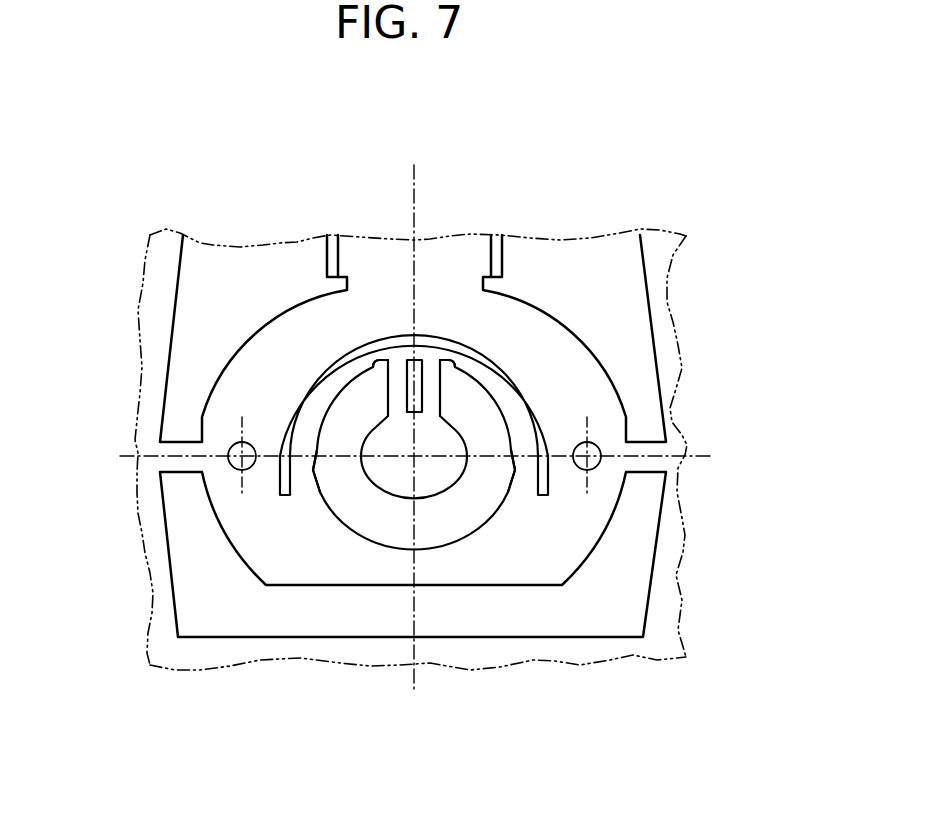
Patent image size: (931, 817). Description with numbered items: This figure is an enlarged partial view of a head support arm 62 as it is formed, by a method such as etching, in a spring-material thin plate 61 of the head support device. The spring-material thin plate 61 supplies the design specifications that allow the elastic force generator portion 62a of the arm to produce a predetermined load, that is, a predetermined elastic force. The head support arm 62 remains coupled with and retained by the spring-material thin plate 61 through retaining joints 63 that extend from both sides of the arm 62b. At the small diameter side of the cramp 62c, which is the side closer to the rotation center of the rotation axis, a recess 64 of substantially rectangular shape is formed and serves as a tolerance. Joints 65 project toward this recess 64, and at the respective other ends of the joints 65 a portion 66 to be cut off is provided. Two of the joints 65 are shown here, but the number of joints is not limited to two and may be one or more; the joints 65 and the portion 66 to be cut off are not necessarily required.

The spring-material thin plate 61 is at (667, 608).
The head support arm 62 is at (457, 262).
The elastic force generator portion 62a is at (303, 475).
The arm 62b is at (527, 335).
The cramp 62c is at (502, 390).
The retaining joints 63 is at (173, 462).
The recess 64 is at (387, 361).
The joints 65 is at (430, 393).
The portion to be cut off 66 is at (388, 442).